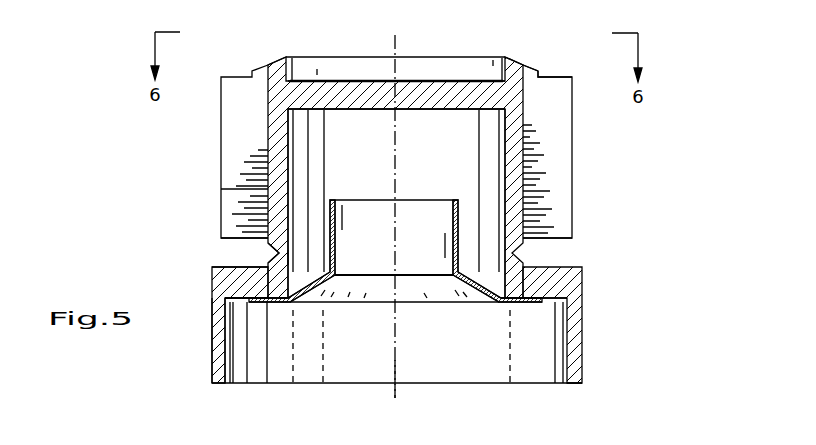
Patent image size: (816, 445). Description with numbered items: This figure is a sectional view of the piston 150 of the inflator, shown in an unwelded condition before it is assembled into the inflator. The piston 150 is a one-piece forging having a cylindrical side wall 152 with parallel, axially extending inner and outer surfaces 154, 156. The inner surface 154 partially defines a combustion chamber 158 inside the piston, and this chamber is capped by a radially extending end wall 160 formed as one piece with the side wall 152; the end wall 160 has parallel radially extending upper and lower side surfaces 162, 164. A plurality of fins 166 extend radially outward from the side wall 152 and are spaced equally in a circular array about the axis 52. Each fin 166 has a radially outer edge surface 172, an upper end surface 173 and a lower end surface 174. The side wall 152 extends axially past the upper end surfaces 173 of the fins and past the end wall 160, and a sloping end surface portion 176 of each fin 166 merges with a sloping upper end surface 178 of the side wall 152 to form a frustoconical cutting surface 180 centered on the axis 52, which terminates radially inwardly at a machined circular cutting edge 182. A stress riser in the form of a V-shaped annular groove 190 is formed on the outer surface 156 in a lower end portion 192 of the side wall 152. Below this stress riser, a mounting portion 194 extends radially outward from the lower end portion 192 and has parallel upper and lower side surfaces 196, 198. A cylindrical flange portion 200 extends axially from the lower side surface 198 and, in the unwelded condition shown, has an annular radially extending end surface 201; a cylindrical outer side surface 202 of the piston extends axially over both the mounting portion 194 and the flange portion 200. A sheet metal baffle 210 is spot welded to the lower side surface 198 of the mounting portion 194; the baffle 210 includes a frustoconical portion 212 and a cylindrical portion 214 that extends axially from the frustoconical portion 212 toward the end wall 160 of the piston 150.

The axis 52 is at (396, 398).
The piston 150 is at (145, 214).
The cylindrical side wall 152 is at (530, 177).
The inner surface 154 is at (505, 162).
The outer surface 156 is at (524, 150).
The combustion chamber 158 is at (420, 188).
The end wall 160 is at (353, 70).
The upper side surface 162 is at (408, 80).
The lower side surface 164 is at (338, 110).
The fins 166 is at (227, 137).
The radially outer edge surface 172 is at (222, 108).
The upper end surface 173 is at (560, 77).
The lower end surface 174 is at (547, 242).
The sloping end surface portion 176 is at (531, 66).
The sloping upper end surface 178 is at (515, 60).
The frustoconical cutting surface 180 is at (262, 50).
The circular cutting edge 182 is at (297, 57).
The annular groove 190 is at (266, 250).
The lower end portion 192 is at (290, 257).
The mounting portion 194 is at (252, 282).
The upper side surface 196 is at (227, 263).
The lower side surface 198 is at (230, 303).
The cylindrical flange portion 200 is at (578, 330).
The annular end surface 201 is at (572, 385).
The cylindrical outer side surface 202 is at (210, 338).
The sheet metal baffle 210 is at (486, 315).
The frustoconical portion 212 is at (472, 288).
The cylindrical portion 214 is at (452, 250).